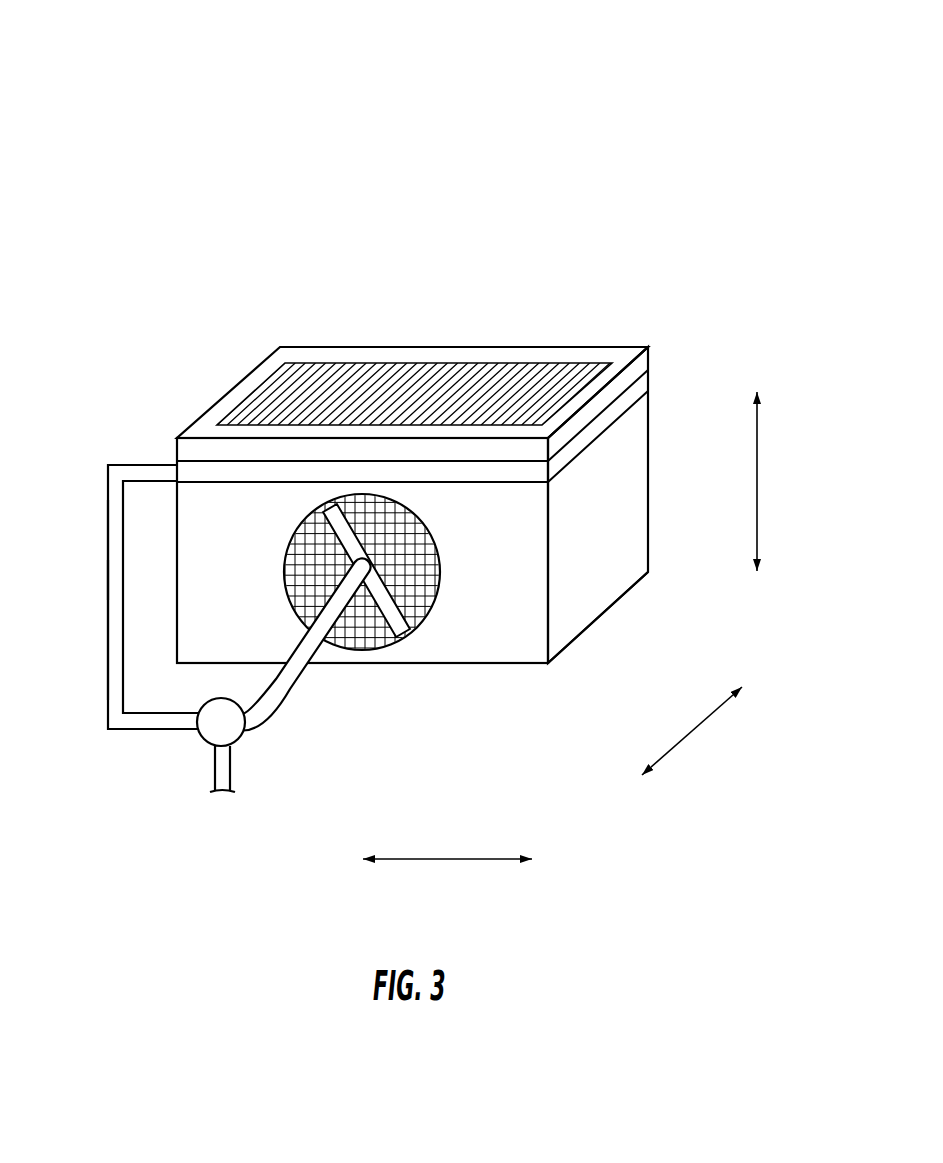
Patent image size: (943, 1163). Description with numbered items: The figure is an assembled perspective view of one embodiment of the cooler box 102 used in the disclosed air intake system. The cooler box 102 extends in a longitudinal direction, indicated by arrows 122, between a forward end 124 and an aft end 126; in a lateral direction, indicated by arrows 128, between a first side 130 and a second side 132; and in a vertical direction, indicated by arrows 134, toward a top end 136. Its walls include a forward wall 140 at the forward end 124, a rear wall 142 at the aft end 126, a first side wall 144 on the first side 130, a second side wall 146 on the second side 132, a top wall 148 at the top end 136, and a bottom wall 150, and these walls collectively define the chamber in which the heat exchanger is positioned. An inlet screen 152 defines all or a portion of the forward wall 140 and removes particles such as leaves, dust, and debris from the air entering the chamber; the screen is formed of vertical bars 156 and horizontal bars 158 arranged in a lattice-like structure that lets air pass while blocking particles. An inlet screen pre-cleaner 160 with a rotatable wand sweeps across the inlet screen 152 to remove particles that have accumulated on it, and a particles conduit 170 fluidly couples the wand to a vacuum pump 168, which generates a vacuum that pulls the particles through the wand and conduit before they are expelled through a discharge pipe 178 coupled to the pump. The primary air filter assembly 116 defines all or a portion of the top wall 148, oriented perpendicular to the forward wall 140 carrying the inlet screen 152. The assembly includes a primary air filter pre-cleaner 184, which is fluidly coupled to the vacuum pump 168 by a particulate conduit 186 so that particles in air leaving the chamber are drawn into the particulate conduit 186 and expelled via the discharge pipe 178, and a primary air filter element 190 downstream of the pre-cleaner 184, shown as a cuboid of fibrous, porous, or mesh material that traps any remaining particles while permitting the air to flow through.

The cooler box 102 is at (128, 108).
The primary air filter assembly 116 is at (440, 479).
The longitudinal direction arrows 122 is at (676, 745).
The forward end 124 is at (375, 692).
The aft end 126 is at (668, 483).
The lateral direction arrows 128 is at (443, 862).
The first side 130 is at (600, 657).
The second side 132 is at (105, 562).
The vertical direction arrows 134 is at (757, 487).
The top end 136 is at (587, 298).
The forward wall 140 is at (438, 645).
The rear wall 142 is at (650, 445).
The first side wall 144 is at (602, 585).
The second side wall 146 is at (177, 512).
The top wall 148 is at (448, 333).
The bottom wall 150 is at (482, 665).
The inlet screen 152 is at (398, 571).
The vertical bars 156 is at (398, 571).
The horizontal bars 158 is at (408, 596).
The inlet screen pre-cleaner 160 is at (333, 542).
The vacuum pump 168 is at (227, 725).
The particles conduit 170 is at (300, 700).
The discharge pipe 178 is at (212, 770).
The primary air filter pre-cleaner 184 is at (642, 387).
The particulate conduit 186 is at (107, 622).
The primary air filter element 190 is at (629, 355).